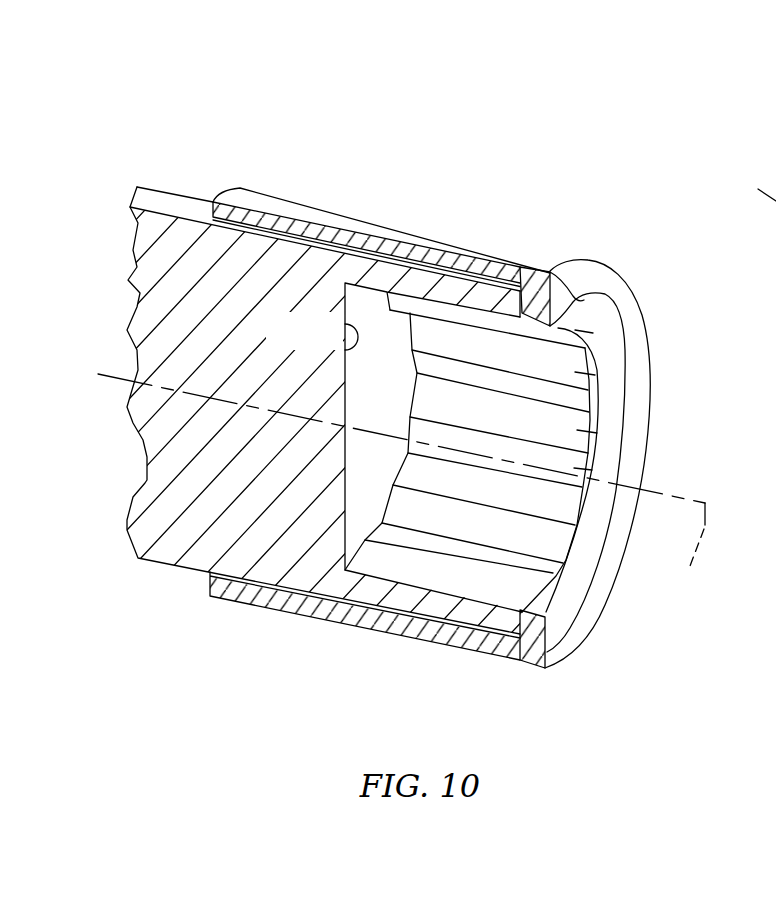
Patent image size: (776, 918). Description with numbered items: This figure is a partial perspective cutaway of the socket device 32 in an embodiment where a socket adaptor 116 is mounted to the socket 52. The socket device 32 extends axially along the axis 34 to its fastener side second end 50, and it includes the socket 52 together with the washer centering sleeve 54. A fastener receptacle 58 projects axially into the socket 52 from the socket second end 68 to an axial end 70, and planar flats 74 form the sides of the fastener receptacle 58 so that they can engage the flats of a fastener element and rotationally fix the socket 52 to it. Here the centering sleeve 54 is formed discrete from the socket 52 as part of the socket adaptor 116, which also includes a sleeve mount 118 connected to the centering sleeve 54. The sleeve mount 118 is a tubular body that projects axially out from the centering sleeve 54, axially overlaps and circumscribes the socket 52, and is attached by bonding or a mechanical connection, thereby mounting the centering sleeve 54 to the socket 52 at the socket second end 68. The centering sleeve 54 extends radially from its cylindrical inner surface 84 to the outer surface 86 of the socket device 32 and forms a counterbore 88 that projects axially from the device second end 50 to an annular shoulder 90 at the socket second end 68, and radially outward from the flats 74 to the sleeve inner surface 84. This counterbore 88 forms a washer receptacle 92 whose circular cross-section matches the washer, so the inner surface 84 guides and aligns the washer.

The socket device 32 is at (517, 180).
The axis 34 is at (401, 486).
The second end of the socket device 50 is at (567, 272).
The socket 52 is at (153, 184).
The washer centering sleeve 54 is at (662, 337).
The fastener receptacle 58 is at (446, 578).
The second end of the socket 68 is at (584, 269).
The axial end of the fastener receptacle 70 is at (333, 332).
The flats 74 is at (574, 468).
The inner surface of the centering sleeve 84 is at (530, 323).
The outer surface of the socket device 86 is at (450, 247).
The counterbore 88 is at (535, 654).
The shoulder 90 is at (597, 327).
The washer receptacle 92 is at (546, 608).
The socket adaptor 116 is at (394, 207).
The sleeve mount 118 is at (325, 219).